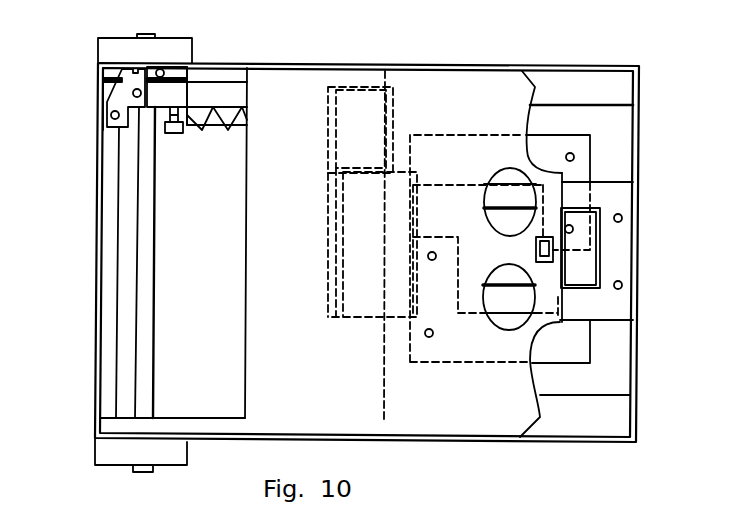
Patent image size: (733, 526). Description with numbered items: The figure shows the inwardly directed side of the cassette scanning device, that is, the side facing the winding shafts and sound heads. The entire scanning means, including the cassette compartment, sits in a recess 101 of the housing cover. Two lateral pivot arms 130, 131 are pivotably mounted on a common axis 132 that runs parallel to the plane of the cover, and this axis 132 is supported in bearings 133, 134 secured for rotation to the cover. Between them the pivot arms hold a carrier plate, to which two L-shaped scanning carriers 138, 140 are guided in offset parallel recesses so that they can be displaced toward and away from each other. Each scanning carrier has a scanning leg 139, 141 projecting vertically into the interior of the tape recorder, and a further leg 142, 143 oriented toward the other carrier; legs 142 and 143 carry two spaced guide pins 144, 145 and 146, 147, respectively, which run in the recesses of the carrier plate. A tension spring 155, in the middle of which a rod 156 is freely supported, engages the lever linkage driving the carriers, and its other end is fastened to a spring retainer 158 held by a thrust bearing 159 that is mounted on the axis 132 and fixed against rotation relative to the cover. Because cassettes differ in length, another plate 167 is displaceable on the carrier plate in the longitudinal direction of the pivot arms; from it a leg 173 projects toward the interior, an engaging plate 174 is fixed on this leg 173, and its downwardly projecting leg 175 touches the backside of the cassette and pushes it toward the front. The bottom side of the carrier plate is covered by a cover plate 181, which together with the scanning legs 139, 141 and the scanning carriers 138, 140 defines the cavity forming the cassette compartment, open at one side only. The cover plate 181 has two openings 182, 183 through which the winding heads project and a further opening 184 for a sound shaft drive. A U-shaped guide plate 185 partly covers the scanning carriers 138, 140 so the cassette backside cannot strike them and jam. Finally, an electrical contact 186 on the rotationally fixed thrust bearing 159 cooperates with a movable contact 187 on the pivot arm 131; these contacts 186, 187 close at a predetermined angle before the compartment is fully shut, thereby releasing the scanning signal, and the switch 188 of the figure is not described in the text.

The recess 101 is at (170, 240).
The pivot arm 130 is at (197, 424).
The pivot arm 131 is at (203, 75).
The axis 132 is at (148, 187).
The bearing 133 is at (107, 445).
The bearing 134 is at (113, 52).
The scanning carrier 138 is at (578, 174).
The scanning leg 139 is at (573, 132).
The scanning carrier 140 is at (577, 337).
The scanning leg 141 is at (575, 368).
The leg 142 is at (575, 203).
The leg 143 is at (436, 313).
The guide pin 144 is at (575, 156).
The guide pin 145 is at (597, 248).
The guide pin 146 is at (432, 261).
The guide pin 147 is at (432, 338).
The tension spring 155 is at (212, 108).
The rod 156 is at (230, 110).
The spring retainer 158 is at (173, 129).
The thrust bearing 159 is at (102, 88).
The plate 167 is at (349, 105).
The leg 173 is at (327, 240).
The engaging plate 174 is at (370, 273).
The leg 175 is at (417, 204).
The cover plate 181 is at (427, 92).
The opening 182 is at (508, 170).
The opening 183 is at (509, 332).
The opening 184 is at (558, 257).
The guide plate 185 is at (618, 232).
The electrical contact 186 is at (120, 98).
The movable contact 187 is at (163, 68).
The latch bar 188 is at (104, 73).